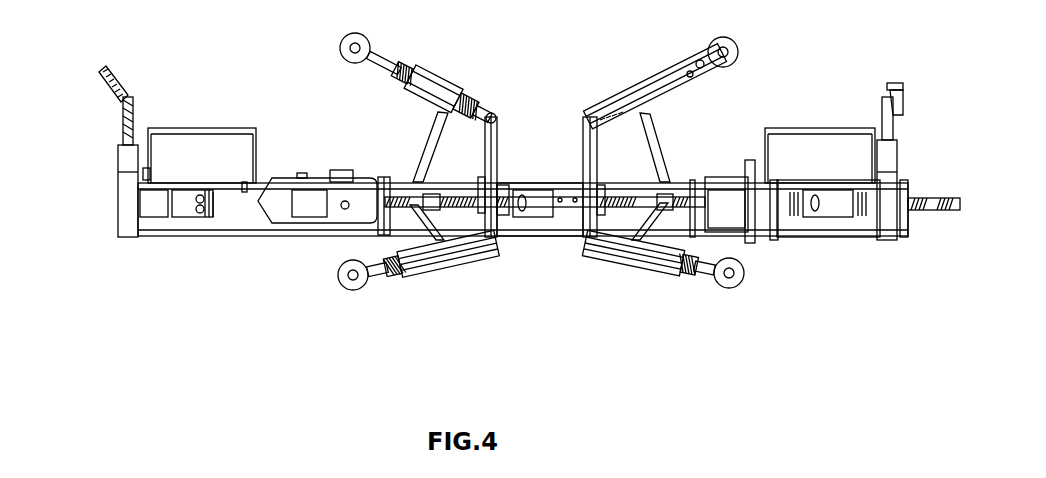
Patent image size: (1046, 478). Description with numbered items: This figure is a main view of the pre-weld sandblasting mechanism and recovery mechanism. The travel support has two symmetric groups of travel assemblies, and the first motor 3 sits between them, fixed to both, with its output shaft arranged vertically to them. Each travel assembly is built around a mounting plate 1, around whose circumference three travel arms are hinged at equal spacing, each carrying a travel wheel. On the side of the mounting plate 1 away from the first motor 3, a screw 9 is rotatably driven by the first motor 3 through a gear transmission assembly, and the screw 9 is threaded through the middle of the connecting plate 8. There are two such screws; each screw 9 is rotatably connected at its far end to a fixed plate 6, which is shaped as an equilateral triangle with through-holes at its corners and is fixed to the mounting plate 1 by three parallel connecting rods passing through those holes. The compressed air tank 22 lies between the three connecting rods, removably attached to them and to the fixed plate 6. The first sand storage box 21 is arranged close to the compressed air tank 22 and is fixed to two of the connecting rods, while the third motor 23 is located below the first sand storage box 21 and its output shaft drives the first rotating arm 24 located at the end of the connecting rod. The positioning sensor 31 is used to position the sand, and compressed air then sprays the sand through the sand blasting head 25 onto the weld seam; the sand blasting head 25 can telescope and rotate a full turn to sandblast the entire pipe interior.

The mounting plate 1 is at (490, 116).
The first motor 3 is at (546, 198).
The positioning sensor 31 is at (497, 118).
The fixed plate 6 is at (377, 178).
The connecting plate 8 is at (415, 203).
The screw 9 is at (657, 200).
The first sand storage box 21 is at (168, 151).
The compressed air tank 22 is at (330, 207).
The third motor 23 is at (190, 200).
The first rotating arm 24 is at (128, 196).
The sand blasting head 25 is at (106, 70).